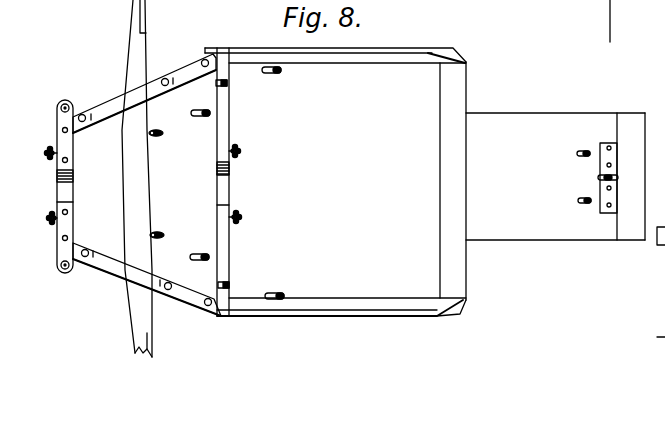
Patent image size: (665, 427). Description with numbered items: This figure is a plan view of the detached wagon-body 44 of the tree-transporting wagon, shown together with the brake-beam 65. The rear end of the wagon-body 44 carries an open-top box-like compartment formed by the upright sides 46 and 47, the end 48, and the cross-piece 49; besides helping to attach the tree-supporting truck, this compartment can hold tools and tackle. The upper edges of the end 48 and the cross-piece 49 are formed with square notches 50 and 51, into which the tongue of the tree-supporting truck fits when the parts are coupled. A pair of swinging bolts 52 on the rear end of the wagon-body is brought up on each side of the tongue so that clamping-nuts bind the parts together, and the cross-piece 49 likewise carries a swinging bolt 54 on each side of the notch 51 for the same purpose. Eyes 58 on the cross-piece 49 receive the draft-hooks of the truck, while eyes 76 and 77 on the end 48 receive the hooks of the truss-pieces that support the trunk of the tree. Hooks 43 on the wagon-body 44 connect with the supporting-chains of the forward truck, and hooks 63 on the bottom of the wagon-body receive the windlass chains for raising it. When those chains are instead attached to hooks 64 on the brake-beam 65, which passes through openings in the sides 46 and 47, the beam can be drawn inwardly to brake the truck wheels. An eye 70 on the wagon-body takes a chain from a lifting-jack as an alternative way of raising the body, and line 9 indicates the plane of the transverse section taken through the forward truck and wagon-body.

The section line 9 is at (609, 31).
The hooks 43 is at (585, 158).
The wagon-body 44 is at (503, 124).
The upright side 46 is at (106, 101).
The upright side 47 is at (122, 269).
The end 48 is at (56, 132).
The cross-piece 49 is at (230, 115).
The square notch 50 is at (57, 192).
The square notch 51 is at (230, 188).
The swinging bolts 52 is at (48, 160).
The swinging bolt 54 is at (239, 144).
The eyes 58 is at (228, 83).
The hooks 63 is at (202, 118).
The hooks 64 is at (158, 129).
The brake-beam 65 is at (125, 169).
The eye 70 is at (285, 72).
The eye 76 is at (64, 104).
The eye 77 is at (60, 266).